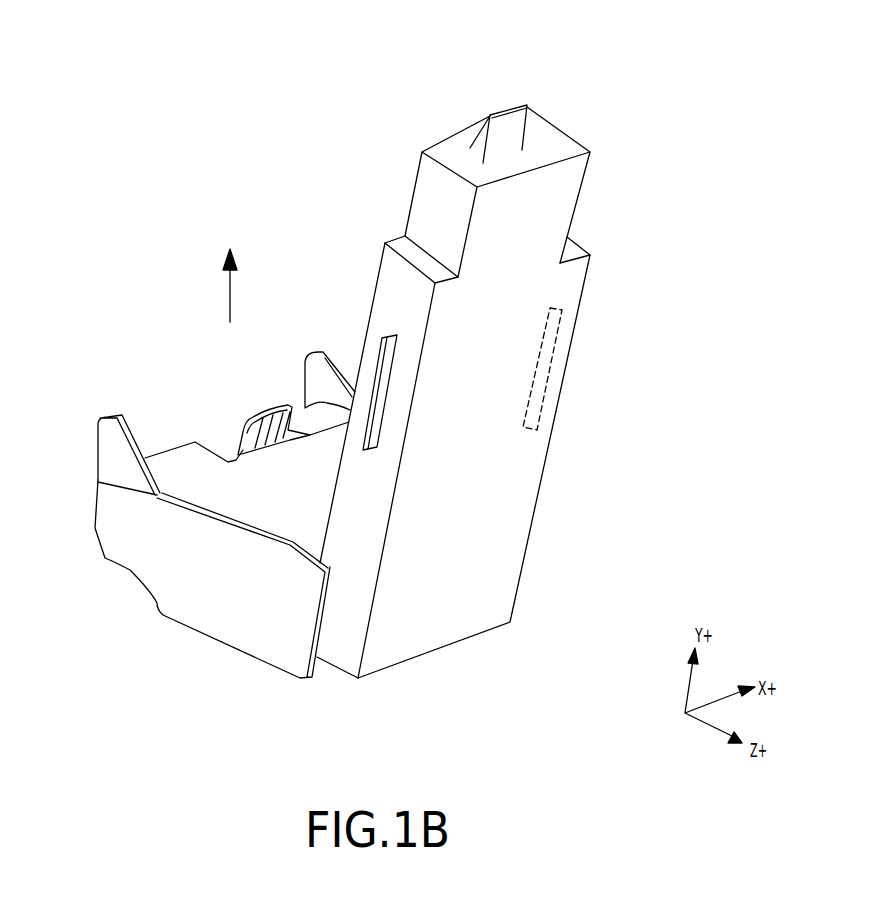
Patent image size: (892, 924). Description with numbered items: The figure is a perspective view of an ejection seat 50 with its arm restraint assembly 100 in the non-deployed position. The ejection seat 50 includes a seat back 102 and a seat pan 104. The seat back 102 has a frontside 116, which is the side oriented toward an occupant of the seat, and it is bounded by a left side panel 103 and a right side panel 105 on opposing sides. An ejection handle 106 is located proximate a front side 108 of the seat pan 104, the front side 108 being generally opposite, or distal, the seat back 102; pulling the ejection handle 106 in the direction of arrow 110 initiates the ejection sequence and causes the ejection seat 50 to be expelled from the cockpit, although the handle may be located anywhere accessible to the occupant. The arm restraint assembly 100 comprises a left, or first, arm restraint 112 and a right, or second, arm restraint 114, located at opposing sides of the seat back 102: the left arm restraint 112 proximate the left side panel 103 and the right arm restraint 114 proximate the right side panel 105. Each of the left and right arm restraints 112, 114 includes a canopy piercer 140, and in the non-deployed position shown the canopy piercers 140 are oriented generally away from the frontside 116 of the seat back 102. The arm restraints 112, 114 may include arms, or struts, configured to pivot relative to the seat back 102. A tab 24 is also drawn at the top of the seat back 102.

The tab 24 is at (520, 102).
The ejection seat 50 is at (640, 145).
The arm restraint assembly 100 is at (476, 460).
The seat back 102 is at (490, 382).
The left side panel 103 is at (387, 315).
The seat pan 104 is at (300, 491).
The right side panel 105 is at (589, 268).
The ejection handle 106 is at (247, 422).
The front side of seat pan 108 is at (195, 442).
The arrow 110 is at (229, 299).
The left arm restraint 112 is at (377, 400).
The right arm restraint 114 is at (527, 390).
The frontside of seat back 116 is at (380, 270).
The canopy piercer 140 is at (403, 348).